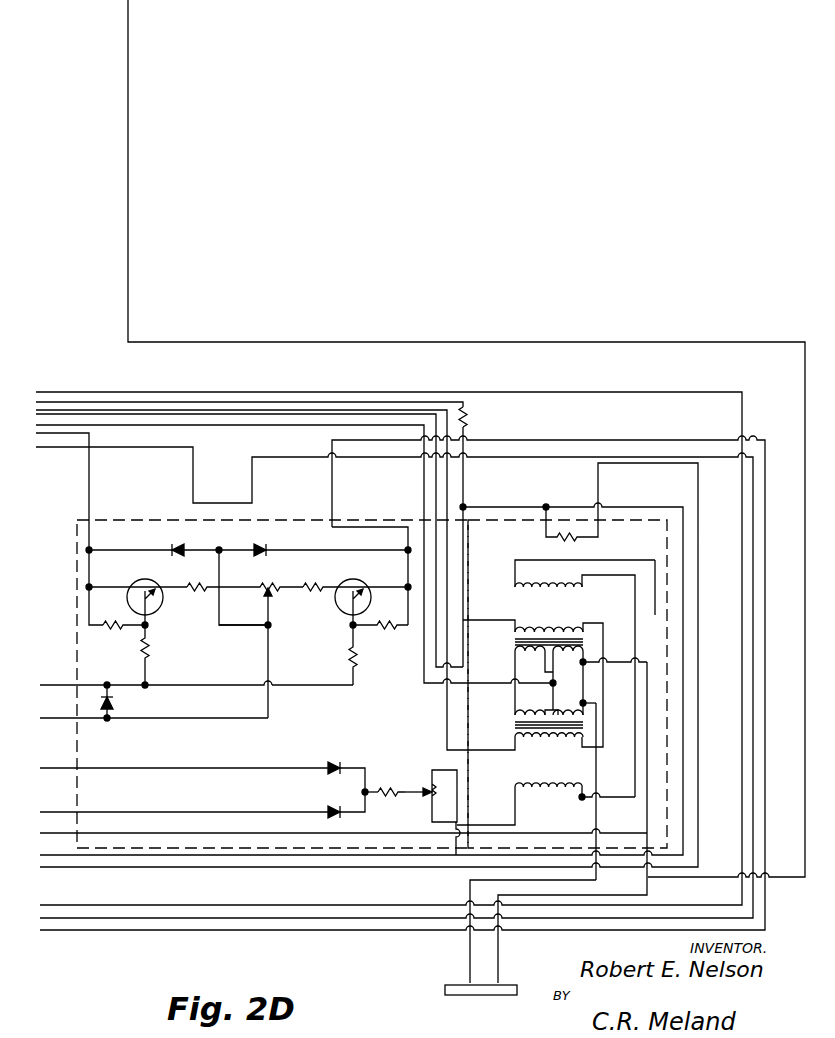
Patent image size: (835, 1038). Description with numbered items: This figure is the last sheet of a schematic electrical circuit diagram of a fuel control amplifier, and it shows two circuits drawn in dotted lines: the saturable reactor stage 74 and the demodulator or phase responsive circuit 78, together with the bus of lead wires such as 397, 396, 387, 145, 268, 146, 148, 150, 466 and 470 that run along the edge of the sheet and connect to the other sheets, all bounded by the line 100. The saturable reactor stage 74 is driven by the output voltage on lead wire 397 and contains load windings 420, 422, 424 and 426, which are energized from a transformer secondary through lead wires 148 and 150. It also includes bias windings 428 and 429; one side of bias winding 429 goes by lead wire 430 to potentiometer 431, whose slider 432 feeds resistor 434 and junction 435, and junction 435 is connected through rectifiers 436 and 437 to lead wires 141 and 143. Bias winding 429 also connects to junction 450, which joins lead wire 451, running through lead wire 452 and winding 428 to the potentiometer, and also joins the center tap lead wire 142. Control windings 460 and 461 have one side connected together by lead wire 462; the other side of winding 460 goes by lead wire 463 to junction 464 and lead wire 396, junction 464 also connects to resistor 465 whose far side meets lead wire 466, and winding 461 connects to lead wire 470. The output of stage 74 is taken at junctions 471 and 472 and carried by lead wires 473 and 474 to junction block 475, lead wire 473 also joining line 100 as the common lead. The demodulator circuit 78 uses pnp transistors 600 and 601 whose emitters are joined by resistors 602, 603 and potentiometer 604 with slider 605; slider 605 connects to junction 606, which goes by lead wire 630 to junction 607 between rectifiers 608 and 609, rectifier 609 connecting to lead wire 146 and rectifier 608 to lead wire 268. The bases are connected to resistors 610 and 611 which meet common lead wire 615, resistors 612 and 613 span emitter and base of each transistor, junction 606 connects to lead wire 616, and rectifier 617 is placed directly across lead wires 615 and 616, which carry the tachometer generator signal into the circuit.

The line 100 is at (130, 107).
The lead wire 397 is at (63, 392).
The lead wire 466 is at (337, 402).
The resistor 465 is at (467, 410).
The junction 464 is at (466, 507).
The lead wire 396 is at (622, 507).
The lead wire 470 is at (96, 410).
The lead wire 150 is at (158, 414).
The lead wire 463 is at (482, 618).
The lead wire 148 is at (222, 425).
The lead wire 146 is at (92, 488).
The conductor 145 is at (70, 447).
The lead wire 268 is at (498, 440).
The lead wire 387 is at (700, 497).
The demodulator circuit 78 is at (350, 518).
The saturable reactor stage 74 is at (498, 518).
The rectifier 608 is at (268, 540).
The rectifier 609 is at (175, 547).
The junction 607 is at (236, 533).
The pnp transistor 601 is at (153, 583).
The resistor 602 is at (197, 592).
The slider 605 is at (245, 634).
The potentiometer 604 is at (262, 585).
The junction 606 is at (270, 625).
The resistor 603 is at (307, 586).
The pnp transistor 600 is at (386, 597).
The resistor 613 is at (362, 628).
The resistor 611 is at (350, 653).
The resistor 612 is at (113, 630).
The resistor 610 is at (149, 647).
The lead wire 630 is at (241, 628).
The lead wire 615 is at (168, 683).
The lead wire 616 is at (187, 717).
The rectifier 617 is at (113, 698).
The lead wire 141 is at (158, 767).
The lead wire 143 is at (114, 811).
The lead wire 142 is at (165, 832).
The rectifier 436 is at (332, 760).
The rectifier 437 is at (326, 811).
The junction 435 is at (365, 786).
The resistor 434 is at (388, 786).
The slider 432 is at (416, 796).
The potentiometer 431 is at (430, 786).
The lead wire 430 is at (482, 823).
The bias winding 428 is at (560, 582).
The lead wire 451 is at (657, 616).
The lead wire 452 is at (636, 720).
The junction 450 is at (583, 795).
The control winding 460 is at (550, 628).
The load winding 422 is at (522, 646).
The load winding 420 is at (584, 648).
The lead wire 462 is at (584, 660).
The junction 471 is at (649, 663).
The junction 472 is at (585, 704).
The lead wire 473 is at (648, 822).
The lead wire 474 is at (470, 951).
The junction block 475 is at (505, 986).
The load winding 424 is at (522, 726).
The load winding 426 is at (568, 730).
The control winding 461 is at (537, 745).
The bias winding 429 is at (543, 790).